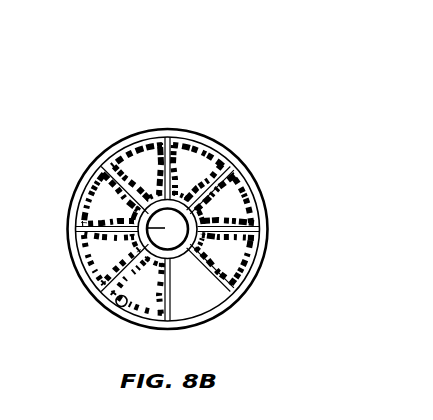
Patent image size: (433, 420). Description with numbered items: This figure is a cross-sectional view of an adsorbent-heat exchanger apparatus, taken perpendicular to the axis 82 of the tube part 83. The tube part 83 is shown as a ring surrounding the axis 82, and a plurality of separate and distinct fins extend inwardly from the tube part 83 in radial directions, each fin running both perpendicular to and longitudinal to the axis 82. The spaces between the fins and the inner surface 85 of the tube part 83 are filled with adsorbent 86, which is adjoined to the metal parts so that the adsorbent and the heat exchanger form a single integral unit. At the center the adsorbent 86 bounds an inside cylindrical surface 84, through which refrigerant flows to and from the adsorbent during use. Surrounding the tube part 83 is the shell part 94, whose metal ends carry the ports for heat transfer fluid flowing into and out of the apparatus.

The axis 82 is at (70, 207).
The tube part 83 is at (138, 143).
The inside cylindrical surface 84 is at (183, 258).
The inner surface 85 is at (122, 307).
The adsorbent 86 is at (250, 192).
The shell part 94 is at (262, 258).